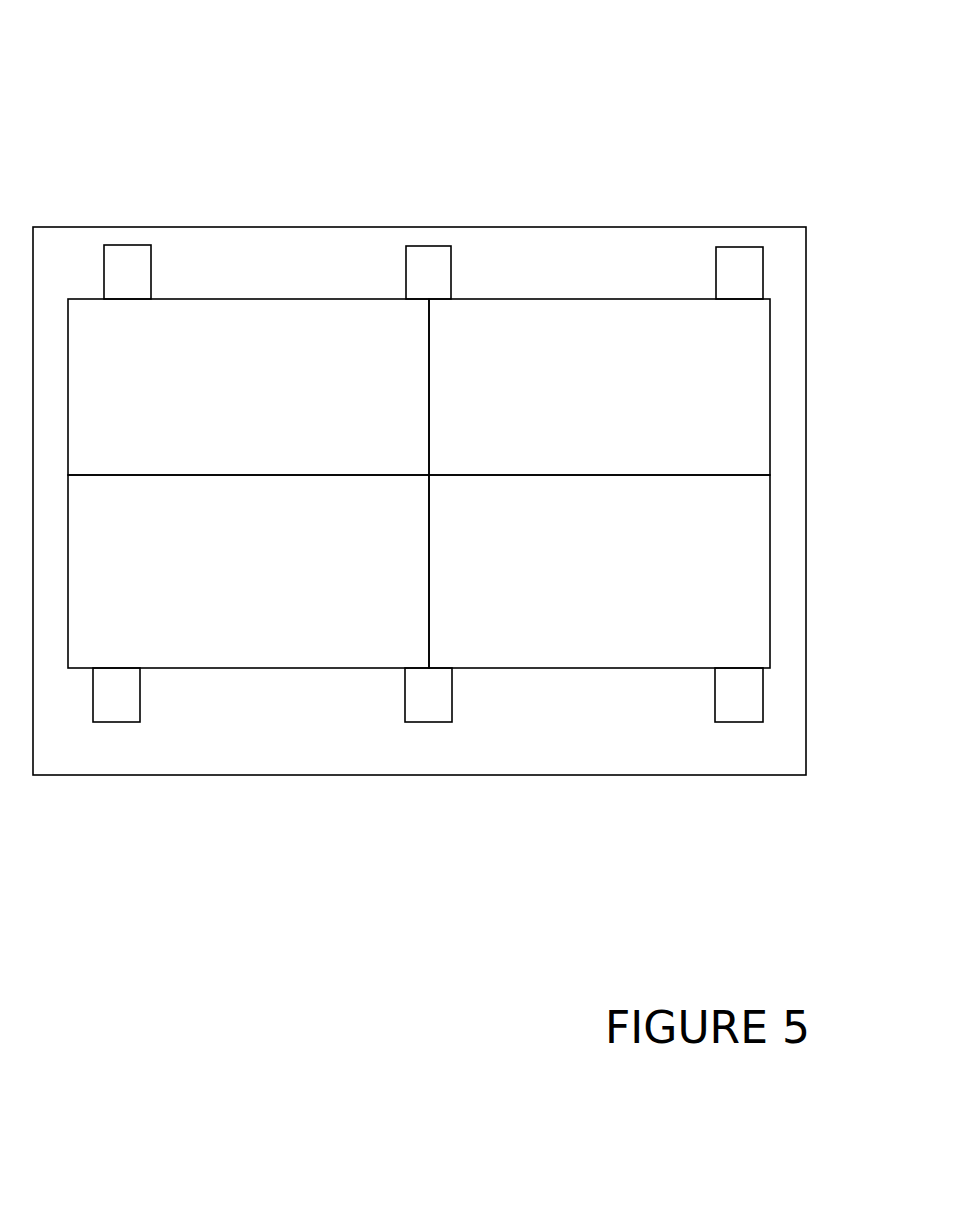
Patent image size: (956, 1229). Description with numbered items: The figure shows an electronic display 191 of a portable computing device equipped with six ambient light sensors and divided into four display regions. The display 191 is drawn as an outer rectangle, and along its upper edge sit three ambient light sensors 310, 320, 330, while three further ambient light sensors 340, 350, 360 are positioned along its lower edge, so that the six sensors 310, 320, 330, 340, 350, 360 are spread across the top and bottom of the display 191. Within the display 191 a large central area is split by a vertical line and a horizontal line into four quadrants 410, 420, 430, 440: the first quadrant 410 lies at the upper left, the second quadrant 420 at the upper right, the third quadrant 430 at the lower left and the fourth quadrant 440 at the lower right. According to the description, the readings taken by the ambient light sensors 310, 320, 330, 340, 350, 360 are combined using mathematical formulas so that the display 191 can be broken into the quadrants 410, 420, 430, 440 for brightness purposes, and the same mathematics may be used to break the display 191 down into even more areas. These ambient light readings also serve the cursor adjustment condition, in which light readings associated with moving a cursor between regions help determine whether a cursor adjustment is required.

The electronic display 191 is at (194, 286).
The ambient light sensor 310 is at (121, 263).
The ambient light sensor 320 is at (429, 282).
The ambient light sensor 330 is at (733, 280).
The ambient light sensor 340 is at (122, 687).
The ambient light sensor 350 is at (428, 687).
The ambient light sensor 360 is at (733, 687).
The quadrant 410 is at (284, 333).
The quadrant 420 is at (572, 333).
The quadrant 430 is at (285, 652).
The quadrant 440 is at (572, 652).